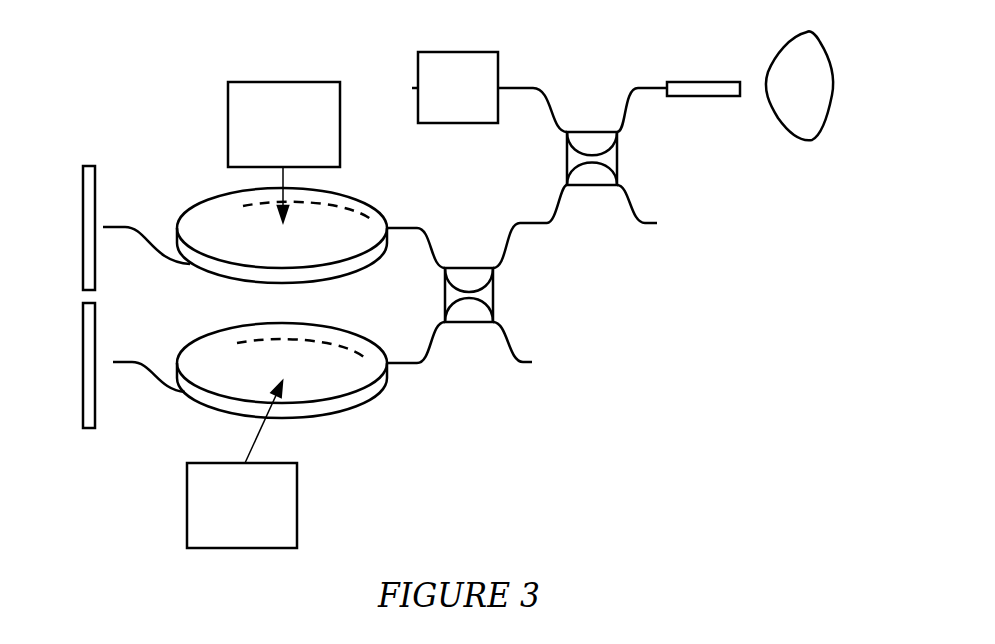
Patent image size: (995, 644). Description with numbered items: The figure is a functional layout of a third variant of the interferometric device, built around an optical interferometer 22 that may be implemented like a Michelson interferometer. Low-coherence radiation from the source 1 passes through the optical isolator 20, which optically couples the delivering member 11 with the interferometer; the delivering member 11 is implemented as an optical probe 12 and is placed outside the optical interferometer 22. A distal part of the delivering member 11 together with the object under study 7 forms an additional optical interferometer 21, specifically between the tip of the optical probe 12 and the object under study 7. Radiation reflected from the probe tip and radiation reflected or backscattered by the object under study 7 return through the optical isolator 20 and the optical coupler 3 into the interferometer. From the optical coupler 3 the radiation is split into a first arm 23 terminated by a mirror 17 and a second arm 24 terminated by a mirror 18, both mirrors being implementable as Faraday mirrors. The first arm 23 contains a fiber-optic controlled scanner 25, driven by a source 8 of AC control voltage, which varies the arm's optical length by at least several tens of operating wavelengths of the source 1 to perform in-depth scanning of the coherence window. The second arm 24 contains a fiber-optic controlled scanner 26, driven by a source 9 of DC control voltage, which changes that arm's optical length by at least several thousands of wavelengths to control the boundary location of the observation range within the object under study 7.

The source 1 is at (455, 87).
The optical coupler 3 is at (469, 269).
The object under study 7 is at (799, 115).
The source of an AC control voltage 8 is at (284, 151).
The source of a DC control voltage 9 is at (242, 465).
The delivering member 11 is at (696, 68).
The optical probe 12 is at (703, 89).
The mirror 17 is at (103, 199).
The mirror 18 is at (98, 397).
The optical isolator 20 is at (592, 186).
The additional optical interferometer 21 is at (691, 114).
The optical interferometer 22 is at (283, 149).
The first arm 23 is at (146, 221).
The second arm 24 is at (148, 393).
The fiber-optic controlled scanner 25 is at (283, 221).
The fiber-optic controlled scanner 26 is at (297, 379).